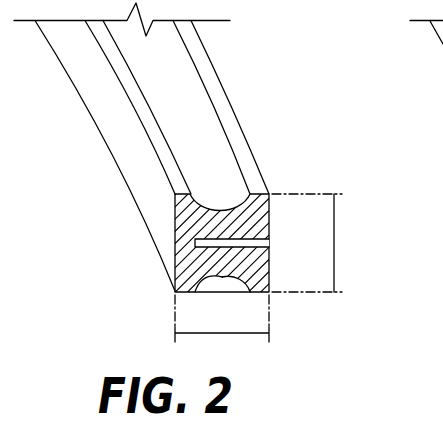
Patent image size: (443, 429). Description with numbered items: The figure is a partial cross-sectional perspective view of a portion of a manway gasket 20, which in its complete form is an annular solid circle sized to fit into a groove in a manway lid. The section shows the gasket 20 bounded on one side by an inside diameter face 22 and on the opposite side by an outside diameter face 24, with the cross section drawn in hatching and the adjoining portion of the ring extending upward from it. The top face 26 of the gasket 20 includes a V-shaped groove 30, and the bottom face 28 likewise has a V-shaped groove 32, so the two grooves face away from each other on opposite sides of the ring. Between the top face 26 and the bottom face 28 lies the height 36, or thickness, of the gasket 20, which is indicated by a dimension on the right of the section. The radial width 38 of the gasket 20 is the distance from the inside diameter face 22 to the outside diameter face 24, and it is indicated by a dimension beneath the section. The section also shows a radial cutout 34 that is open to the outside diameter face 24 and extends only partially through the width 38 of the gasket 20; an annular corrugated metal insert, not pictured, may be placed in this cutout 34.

The manway gasket 20 is at (302, 146).
The inside diameter face 22 is at (120, 143).
The outside diameter face 24 is at (269, 213).
The top face 26 is at (220, 100).
The bottom face 28 is at (196, 293).
The V-shaped groove 30 is at (182, 82).
The V-shaped groove 32 is at (237, 292).
The radial cutout 34 is at (269, 243).
The height 36 is at (334, 256).
The radial width 38 is at (238, 333).